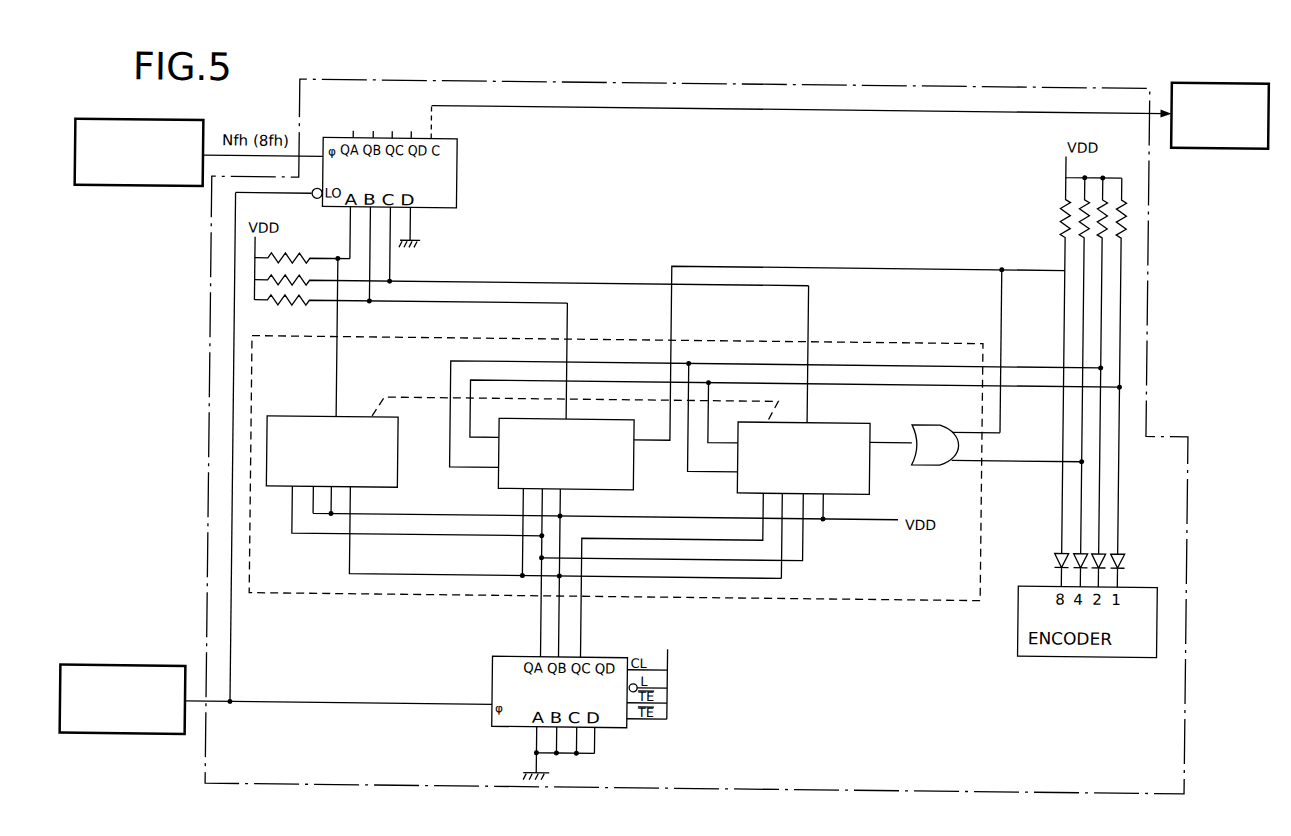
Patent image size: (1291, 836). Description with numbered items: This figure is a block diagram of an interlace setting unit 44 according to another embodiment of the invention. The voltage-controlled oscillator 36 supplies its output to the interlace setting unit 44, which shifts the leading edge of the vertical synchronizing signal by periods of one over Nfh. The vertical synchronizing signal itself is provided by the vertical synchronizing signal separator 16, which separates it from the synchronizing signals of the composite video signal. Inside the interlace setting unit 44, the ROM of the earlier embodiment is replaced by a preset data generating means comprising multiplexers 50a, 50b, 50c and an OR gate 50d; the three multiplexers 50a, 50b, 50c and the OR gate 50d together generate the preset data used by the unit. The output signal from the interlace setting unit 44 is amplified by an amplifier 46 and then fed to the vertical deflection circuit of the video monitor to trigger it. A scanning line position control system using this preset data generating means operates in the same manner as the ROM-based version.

The vertical synchronizing signal separator 16 is at (105, 671).
The voltage-controlled oscillator 36 is at (139, 191).
The interlace setting unit 44 is at (839, 156).
The amplifier 46 is at (1223, 142).
The multiplexer 50a is at (398, 476).
The multiplexer 50b is at (634, 479).
The multiplexer 50c is at (868, 484).
The OR gate 50d is at (944, 462).